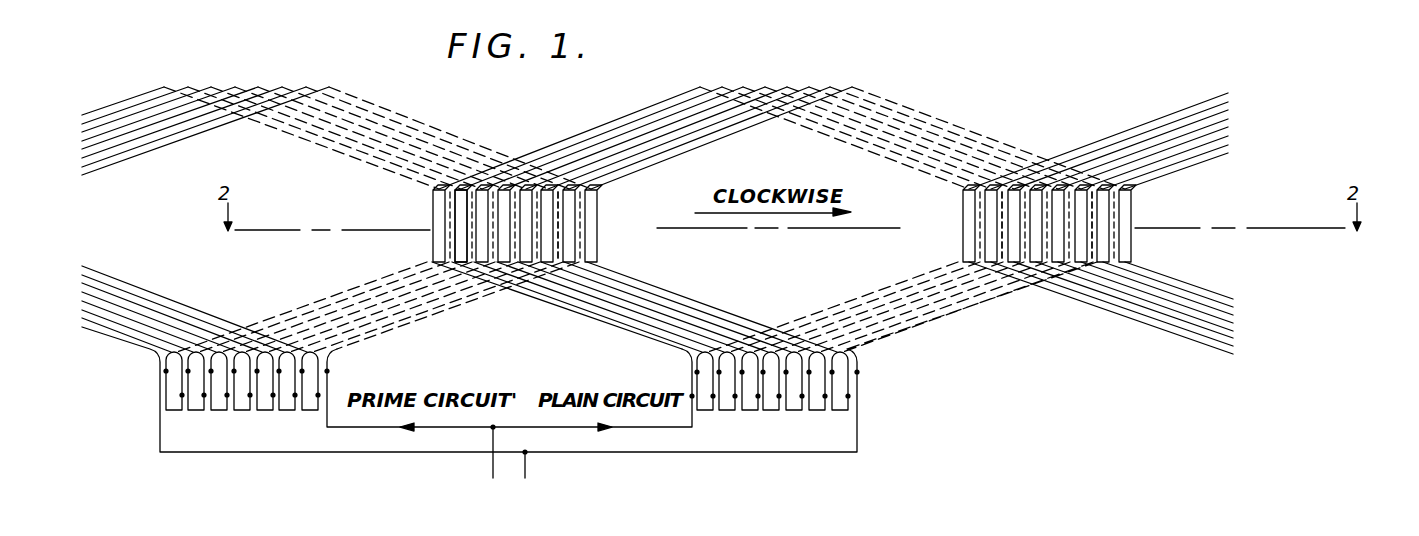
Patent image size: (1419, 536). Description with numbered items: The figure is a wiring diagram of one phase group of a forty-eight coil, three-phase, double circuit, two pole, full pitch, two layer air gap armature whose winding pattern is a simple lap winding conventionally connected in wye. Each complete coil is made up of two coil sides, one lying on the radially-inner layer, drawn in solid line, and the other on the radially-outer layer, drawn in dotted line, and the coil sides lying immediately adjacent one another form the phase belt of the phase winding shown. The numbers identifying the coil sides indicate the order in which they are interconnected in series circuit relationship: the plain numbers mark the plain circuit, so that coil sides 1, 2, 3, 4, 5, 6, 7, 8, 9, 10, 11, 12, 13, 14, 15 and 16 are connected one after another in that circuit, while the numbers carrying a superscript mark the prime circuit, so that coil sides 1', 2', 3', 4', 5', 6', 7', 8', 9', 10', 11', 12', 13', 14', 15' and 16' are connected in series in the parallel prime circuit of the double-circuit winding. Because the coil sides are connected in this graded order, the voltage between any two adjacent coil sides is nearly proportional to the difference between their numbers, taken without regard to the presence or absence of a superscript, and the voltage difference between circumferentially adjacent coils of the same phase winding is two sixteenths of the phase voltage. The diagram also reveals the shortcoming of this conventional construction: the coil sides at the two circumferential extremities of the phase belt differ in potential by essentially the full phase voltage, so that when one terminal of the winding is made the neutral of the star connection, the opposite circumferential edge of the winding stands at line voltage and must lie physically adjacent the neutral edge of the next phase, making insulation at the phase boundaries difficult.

The coil side 1 is at (422, 223).
The coil side 1' is at (616, 223).
The coil side 2 is at (953, 226).
The coil side 2' is at (1150, 226).
The coil side 3 is at (429, 223).
The coil side 3' is at (605, 223).
The coil side 4 is at (964, 230).
The coil side 4' is at (1138, 229).
The coil side 5 is at (467, 182).
The coil side 5' is at (557, 270).
The coil side 6 is at (1028, 176).
The coil side 6' is at (1070, 267).
The coil side 7 is at (514, 180).
The coil side 7' is at (517, 270).
The coil side 8 is at (1069, 176).
The coil side 8' is at (1030, 267).
The coil side 9 is at (502, 267).
The coil side 9' is at (530, 181).
The coil side 10 is at (1042, 270).
The coil side 10' is at (1057, 175).
The coil side 11 is at (539, 267).
The coil side 11' is at (499, 181).
The coil side 12 is at (1090, 270).
The coil side 12' is at (1010, 175).
The coil side 13 is at (604, 232).
The coil side 13' is at (425, 234).
The coil side 14 is at (1140, 223).
The coil side 14' is at (960, 223).
The coil side 15 is at (614, 226).
The coil side 15' is at (416, 226).
The coil side 16 is at (1153, 223).
The coil side 16' is at (949, 223).